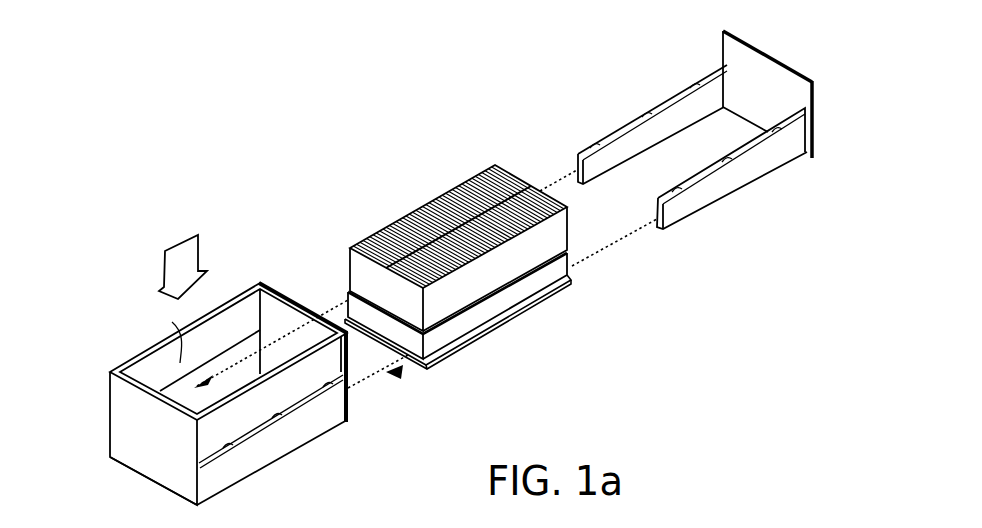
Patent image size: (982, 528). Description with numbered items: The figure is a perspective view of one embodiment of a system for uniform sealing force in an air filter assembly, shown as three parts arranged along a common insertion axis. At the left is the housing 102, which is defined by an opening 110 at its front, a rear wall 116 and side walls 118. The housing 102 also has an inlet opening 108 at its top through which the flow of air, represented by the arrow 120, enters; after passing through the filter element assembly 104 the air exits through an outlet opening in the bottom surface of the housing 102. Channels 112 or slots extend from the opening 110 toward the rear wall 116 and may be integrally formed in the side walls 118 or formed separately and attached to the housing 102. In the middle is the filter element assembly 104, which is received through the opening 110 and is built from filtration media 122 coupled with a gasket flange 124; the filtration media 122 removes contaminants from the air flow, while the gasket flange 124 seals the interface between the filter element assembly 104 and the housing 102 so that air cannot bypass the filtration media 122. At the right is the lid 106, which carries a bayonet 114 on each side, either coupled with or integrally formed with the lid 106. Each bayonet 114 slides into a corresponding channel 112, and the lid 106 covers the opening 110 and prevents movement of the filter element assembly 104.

The housing 102 is at (118, 322).
The filter element assembly 104 is at (376, 191).
The lid 106 is at (768, 52).
The opening 108 is at (161, 337).
The opening 110 is at (403, 372).
The channels 112 is at (250, 348).
The bayonet 114 is at (745, 172).
The rear wall 116 is at (148, 455).
The side walls 118 is at (125, 368).
The arrow 120 is at (203, 250).
The filtration media 122 is at (503, 287).
The gasket flange 124 is at (518, 318).